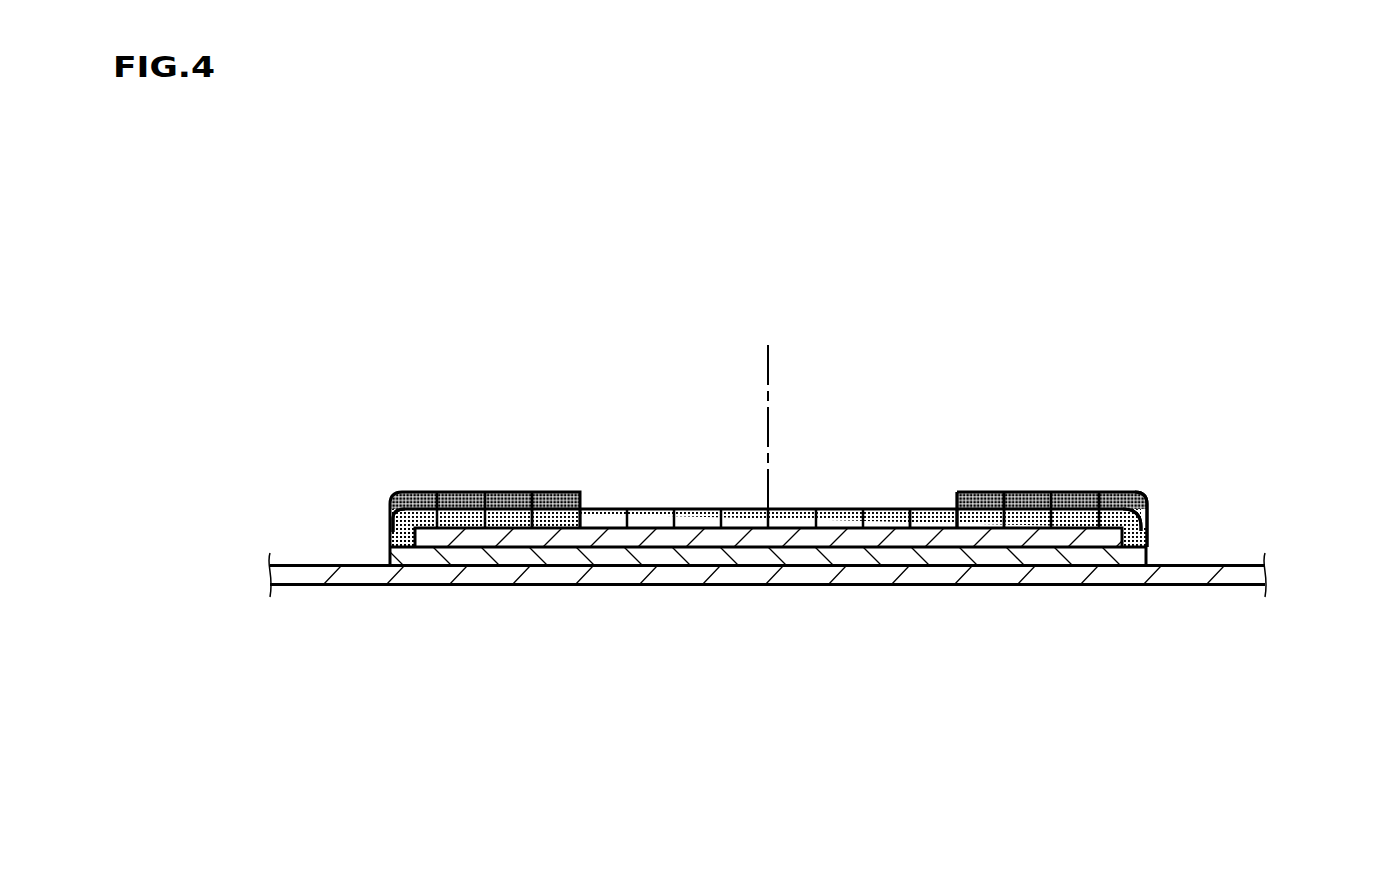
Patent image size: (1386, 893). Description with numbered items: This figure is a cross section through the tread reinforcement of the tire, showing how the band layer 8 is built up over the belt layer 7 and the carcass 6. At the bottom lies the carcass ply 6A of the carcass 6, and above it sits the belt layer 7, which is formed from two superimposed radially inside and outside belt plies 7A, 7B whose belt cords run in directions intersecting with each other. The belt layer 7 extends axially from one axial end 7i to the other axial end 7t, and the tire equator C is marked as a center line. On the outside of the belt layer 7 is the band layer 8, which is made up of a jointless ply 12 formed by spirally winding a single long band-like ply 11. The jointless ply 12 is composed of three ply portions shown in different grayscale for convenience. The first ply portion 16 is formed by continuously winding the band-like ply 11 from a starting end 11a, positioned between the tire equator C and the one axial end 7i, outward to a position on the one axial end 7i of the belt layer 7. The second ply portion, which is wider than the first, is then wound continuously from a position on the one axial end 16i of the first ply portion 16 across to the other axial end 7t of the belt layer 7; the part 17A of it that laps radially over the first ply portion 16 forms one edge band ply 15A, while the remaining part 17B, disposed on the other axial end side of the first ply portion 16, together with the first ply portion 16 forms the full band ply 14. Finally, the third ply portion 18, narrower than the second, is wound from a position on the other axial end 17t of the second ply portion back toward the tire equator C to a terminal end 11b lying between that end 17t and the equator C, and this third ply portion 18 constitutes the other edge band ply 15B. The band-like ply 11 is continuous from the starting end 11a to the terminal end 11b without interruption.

The carcass 6 is at (818, 620).
The carcass ply 6A is at (1188, 580).
The belt layer 7 is at (770, 607).
The belt ply 7A is at (705, 553).
The belt ply 7B is at (828, 535).
The one axial end of the belt layer 7i is at (390, 556).
The other axial end of the belt layer 7t is at (1148, 558).
The band layer 8 is at (1101, 429).
The jointless ply 12 is at (1105, 475).
The band-like ply 11 is at (933, 517).
The starting end 11a is at (552, 520).
The terminal end 11b is at (982, 500).
The full band ply 14 is at (769, 472).
The first ply portion 16 is at (462, 519).
The one axial end of the first ply portion 16i is at (388, 538).
The part of the second ply portion 17A is at (494, 408).
The edge band ply 15A is at (512, 503).
The part of the second ply portion 17B is at (697, 520).
The third ply portion 18 is at (1052, 408).
The edge band ply 15B is at (1028, 500).
The other axial end of the second ply portion 17t is at (1148, 538).
The tire equator C is at (768, 367).